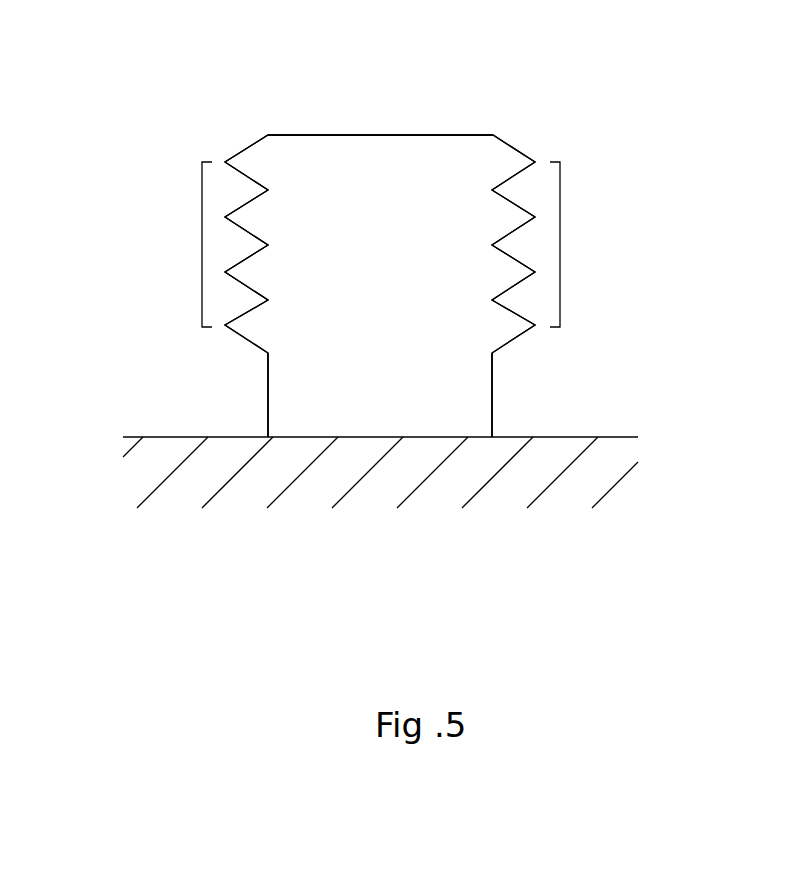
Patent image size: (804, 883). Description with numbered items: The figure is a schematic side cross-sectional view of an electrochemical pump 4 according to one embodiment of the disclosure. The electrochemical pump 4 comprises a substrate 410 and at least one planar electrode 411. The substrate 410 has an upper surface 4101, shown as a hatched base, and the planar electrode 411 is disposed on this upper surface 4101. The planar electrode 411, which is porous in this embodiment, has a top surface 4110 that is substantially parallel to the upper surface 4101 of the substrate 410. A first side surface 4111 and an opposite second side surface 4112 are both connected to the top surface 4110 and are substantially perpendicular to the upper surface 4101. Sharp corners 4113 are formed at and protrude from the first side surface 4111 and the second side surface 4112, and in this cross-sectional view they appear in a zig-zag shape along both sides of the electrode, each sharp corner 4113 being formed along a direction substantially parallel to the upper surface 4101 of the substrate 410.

The electrochemical pump 4 is at (128, 76).
The planar electrode 411 is at (425, 160).
The top surface 4110 is at (330, 135).
The sharp corner 4113 is at (384, 244).
The upper surface 4101 is at (170, 437).
The substrate 410 is at (593, 465).
The first side surface 4111 is at (267, 397).
The second side surface 4112 is at (492, 397).